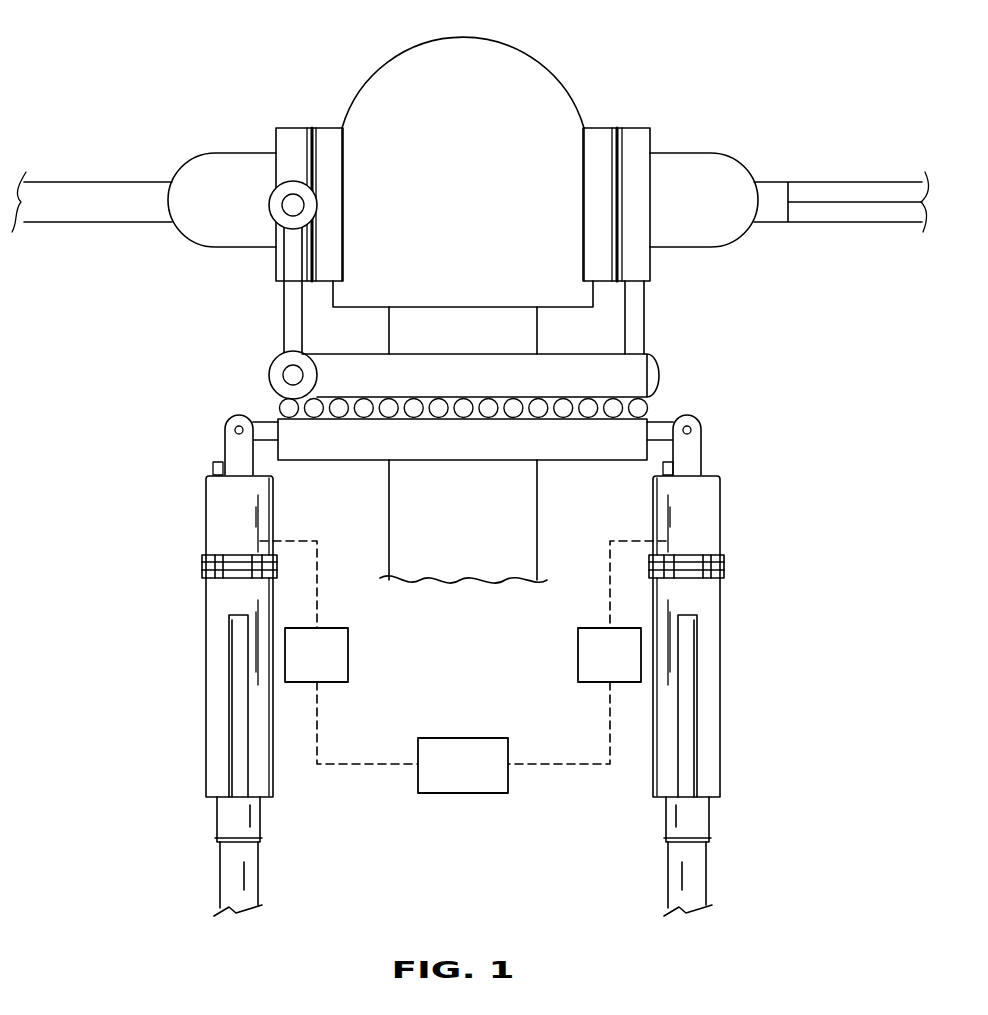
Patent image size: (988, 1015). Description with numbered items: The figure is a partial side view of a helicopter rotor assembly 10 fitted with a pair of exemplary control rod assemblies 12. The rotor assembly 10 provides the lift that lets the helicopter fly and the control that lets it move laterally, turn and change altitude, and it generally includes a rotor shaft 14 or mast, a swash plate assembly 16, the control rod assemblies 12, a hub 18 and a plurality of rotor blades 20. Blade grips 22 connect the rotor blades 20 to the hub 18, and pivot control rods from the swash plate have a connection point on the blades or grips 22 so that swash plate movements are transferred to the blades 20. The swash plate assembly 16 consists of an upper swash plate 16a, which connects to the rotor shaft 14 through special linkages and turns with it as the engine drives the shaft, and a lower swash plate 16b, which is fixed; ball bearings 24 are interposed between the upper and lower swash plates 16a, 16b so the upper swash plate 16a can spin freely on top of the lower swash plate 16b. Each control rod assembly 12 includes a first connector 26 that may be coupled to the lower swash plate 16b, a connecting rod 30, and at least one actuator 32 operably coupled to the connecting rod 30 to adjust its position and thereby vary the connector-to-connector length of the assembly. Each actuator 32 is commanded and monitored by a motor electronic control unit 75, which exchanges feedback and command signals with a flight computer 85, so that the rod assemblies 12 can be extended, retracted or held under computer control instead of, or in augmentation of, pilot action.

The helicopter rotor assembly 10 is at (72, 92).
The control rod assembly 12 is at (189, 547).
The rotor shaft 14 is at (482, 562).
The swash plate assembly 16 is at (258, 362).
The upper swash plate 16a is at (638, 377).
The lower swash plate 16b is at (634, 433).
The hub 18 is at (537, 88).
The rotor blades 20 is at (92, 200).
The blade grips 22 is at (224, 176).
The ball bearings 24 is at (280, 408).
The first connector 26 is at (232, 450).
The connecting rod 30 is at (233, 880).
The actuator 32 is at (207, 662).
The motor electronic control unit 75 is at (330, 669).
The flight computer 85 is at (447, 781).